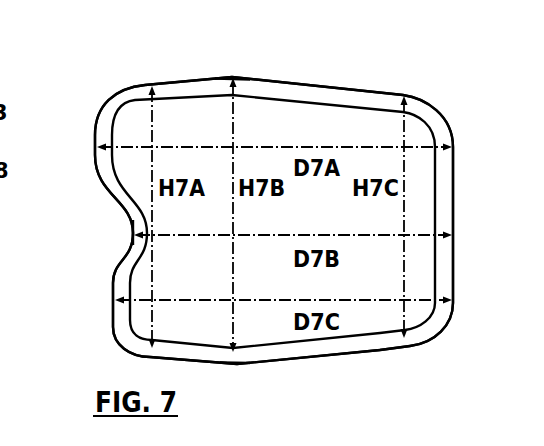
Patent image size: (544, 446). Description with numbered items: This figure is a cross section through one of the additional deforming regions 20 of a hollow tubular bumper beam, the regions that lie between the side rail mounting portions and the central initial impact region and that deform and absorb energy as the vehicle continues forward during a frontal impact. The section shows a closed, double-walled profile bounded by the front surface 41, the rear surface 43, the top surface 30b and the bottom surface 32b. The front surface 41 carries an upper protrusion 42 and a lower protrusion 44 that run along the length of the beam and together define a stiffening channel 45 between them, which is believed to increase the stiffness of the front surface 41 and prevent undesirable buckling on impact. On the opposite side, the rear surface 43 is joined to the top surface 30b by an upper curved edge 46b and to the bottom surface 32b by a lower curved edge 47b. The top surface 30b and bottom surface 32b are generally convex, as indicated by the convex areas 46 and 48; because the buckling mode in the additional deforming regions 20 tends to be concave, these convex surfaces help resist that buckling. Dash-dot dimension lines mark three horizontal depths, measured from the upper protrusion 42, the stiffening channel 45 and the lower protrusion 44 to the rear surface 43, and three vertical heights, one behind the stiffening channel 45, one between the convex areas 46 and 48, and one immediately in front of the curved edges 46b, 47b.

The additional deforming region 20 is at (472, 228).
The top surface 30b is at (297, 79).
The bottom surface 32b is at (291, 364).
The front surface 41 is at (76, 224).
The upper protrusion 42 is at (95, 150).
The rear surface 43 is at (458, 167).
The lower protrusion 44 is at (113, 300).
The stiffening channel 45 is at (132, 235).
The convex area 46 is at (232, 77).
The upper curved edge 46b is at (445, 118).
The lower curved edge 47b is at (440, 334).
The convex area 48 is at (232, 365).